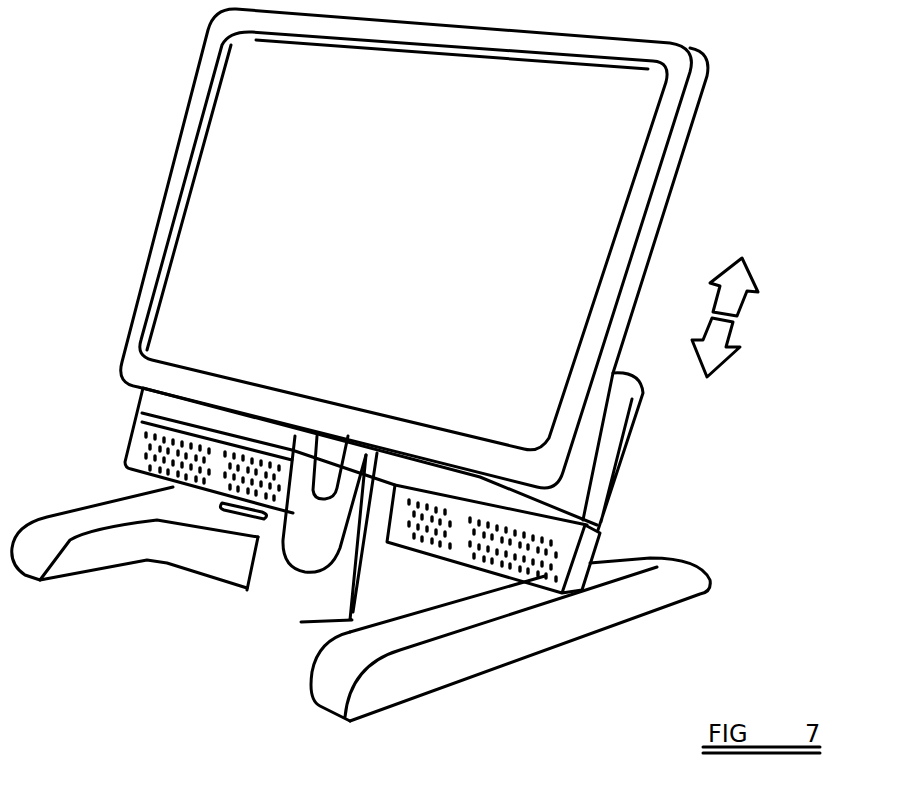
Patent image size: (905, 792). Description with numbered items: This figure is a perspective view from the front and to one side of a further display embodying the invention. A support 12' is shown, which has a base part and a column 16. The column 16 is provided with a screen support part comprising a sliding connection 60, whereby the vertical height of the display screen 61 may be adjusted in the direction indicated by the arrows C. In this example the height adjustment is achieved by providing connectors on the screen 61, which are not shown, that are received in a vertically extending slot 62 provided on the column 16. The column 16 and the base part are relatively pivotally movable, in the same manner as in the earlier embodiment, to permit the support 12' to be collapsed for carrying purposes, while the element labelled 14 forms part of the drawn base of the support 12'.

The display screen 61 is at (603, 152).
The arrows C is at (742, 305).
The sliding connection 60 is at (277, 530).
The vertically extending slot 62 is at (377, 453).
The column 16 is at (242, 555).
The support 12' is at (135, 565).
The base foot 14 is at (503, 635).